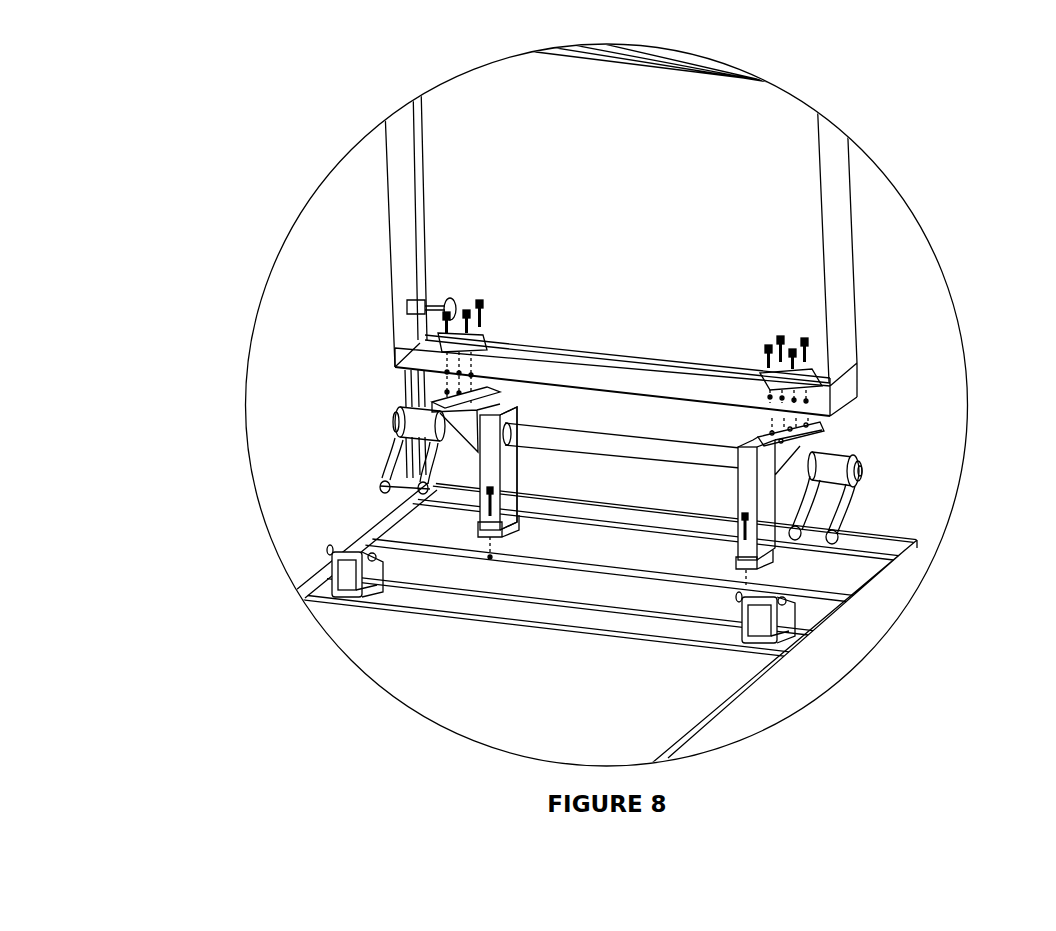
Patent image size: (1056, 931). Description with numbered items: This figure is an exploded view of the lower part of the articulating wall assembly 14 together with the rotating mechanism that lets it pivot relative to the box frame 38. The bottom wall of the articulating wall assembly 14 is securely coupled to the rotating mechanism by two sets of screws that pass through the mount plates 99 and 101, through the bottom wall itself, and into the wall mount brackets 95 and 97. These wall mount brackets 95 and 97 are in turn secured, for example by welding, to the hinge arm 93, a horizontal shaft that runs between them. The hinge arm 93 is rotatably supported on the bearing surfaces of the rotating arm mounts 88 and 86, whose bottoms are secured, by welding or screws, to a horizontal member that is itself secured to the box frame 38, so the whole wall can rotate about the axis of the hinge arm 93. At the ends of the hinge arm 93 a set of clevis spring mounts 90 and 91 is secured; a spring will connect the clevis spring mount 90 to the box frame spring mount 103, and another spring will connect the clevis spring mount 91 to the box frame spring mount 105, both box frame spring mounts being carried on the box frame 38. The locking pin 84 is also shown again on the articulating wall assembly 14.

The articulating wall assembly 14 is at (407, 222).
The box frame 38 is at (748, 688).
The locking pin 84 is at (413, 309).
The rotating arm mount 86 is at (516, 495).
The rotating arm mount 88 is at (770, 512).
The clevis spring mount 90 is at (858, 471).
The clevis spring mount 91 is at (417, 425).
The hinge arm 93 is at (578, 447).
The wall mount bracket 95 is at (823, 428).
The wall mount bracket 97 is at (463, 425).
The mount plate 99 is at (823, 375).
The mount plate 101 is at (407, 344).
The box frame spring mount 103 is at (787, 622).
The box frame spring mount 105 is at (337, 552).